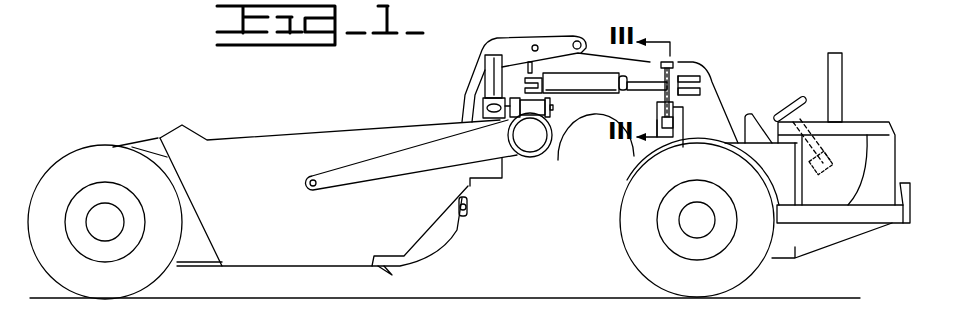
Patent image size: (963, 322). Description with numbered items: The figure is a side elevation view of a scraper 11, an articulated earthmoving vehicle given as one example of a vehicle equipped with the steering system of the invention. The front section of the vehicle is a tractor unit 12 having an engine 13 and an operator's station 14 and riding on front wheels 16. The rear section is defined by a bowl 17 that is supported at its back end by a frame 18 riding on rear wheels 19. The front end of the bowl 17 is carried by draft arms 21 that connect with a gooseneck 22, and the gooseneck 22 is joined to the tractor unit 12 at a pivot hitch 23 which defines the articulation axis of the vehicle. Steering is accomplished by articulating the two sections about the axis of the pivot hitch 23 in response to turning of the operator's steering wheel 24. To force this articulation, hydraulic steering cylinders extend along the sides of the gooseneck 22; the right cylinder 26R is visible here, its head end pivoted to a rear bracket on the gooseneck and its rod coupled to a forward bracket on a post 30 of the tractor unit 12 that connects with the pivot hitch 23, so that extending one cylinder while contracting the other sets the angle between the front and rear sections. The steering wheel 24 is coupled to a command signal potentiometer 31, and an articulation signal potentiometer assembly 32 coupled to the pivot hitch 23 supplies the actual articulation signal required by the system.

The scraper 11 is at (765, 153).
The tractor unit 12 is at (855, 213).
The engine 13 is at (838, 202).
The operator's station 14 is at (752, 112).
The front wheels 16 is at (708, 291).
The bowl 17 is at (300, 233).
The frame 18 is at (187, 263).
The rear wheels 19 is at (112, 291).
The draft arms 21 is at (443, 167).
The gooseneck 22 is at (597, 62).
The pivot hitch 23 is at (676, 60).
The steering wheel 24 is at (785, 90).
The right cylinder 26R is at (568, 146).
The post 30 is at (716, 93).
The command signal potentiometer 31 is at (836, 142).
The articulation signal potentiometer assembly 32 is at (677, 123).